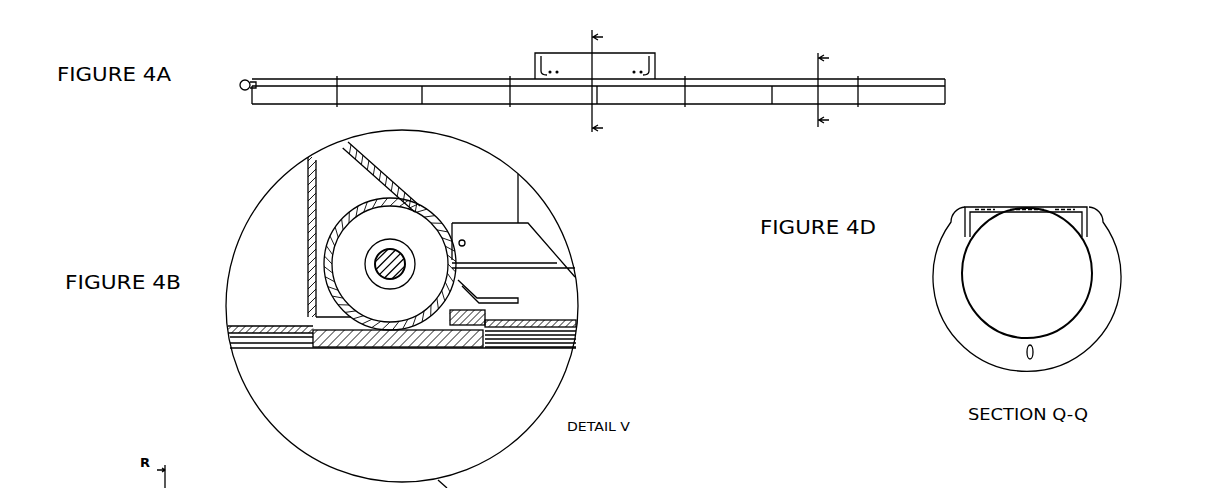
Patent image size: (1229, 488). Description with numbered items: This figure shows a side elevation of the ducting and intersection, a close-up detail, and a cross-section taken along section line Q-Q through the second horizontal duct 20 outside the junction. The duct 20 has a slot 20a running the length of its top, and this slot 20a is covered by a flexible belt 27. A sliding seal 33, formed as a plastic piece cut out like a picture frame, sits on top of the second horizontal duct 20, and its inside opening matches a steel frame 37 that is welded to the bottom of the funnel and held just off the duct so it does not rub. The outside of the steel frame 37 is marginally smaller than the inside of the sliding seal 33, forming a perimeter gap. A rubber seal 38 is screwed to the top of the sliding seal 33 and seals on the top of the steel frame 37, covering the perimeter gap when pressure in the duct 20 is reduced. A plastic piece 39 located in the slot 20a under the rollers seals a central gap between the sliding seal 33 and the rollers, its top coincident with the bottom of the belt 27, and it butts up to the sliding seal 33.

In FIG. 4A, the flexible belt 27 is at (363, 80).
In FIG. 4D, the flexible belt 27 is at (1022, 203).
In FIG. 4B, the sliding seal 33 is at (483, 331).
In FIG. 4B, the steel frame 37 is at (537, 323).
In FIG. 4B, the rubber seal 38 is at (498, 314).
In FIG. 4B, the plastic piece 39 is at (368, 348).
In FIG. 4D, the second horizontal duct 20 is at (988, 301).
In FIG. 4D, the slot 20a is at (1027, 212).